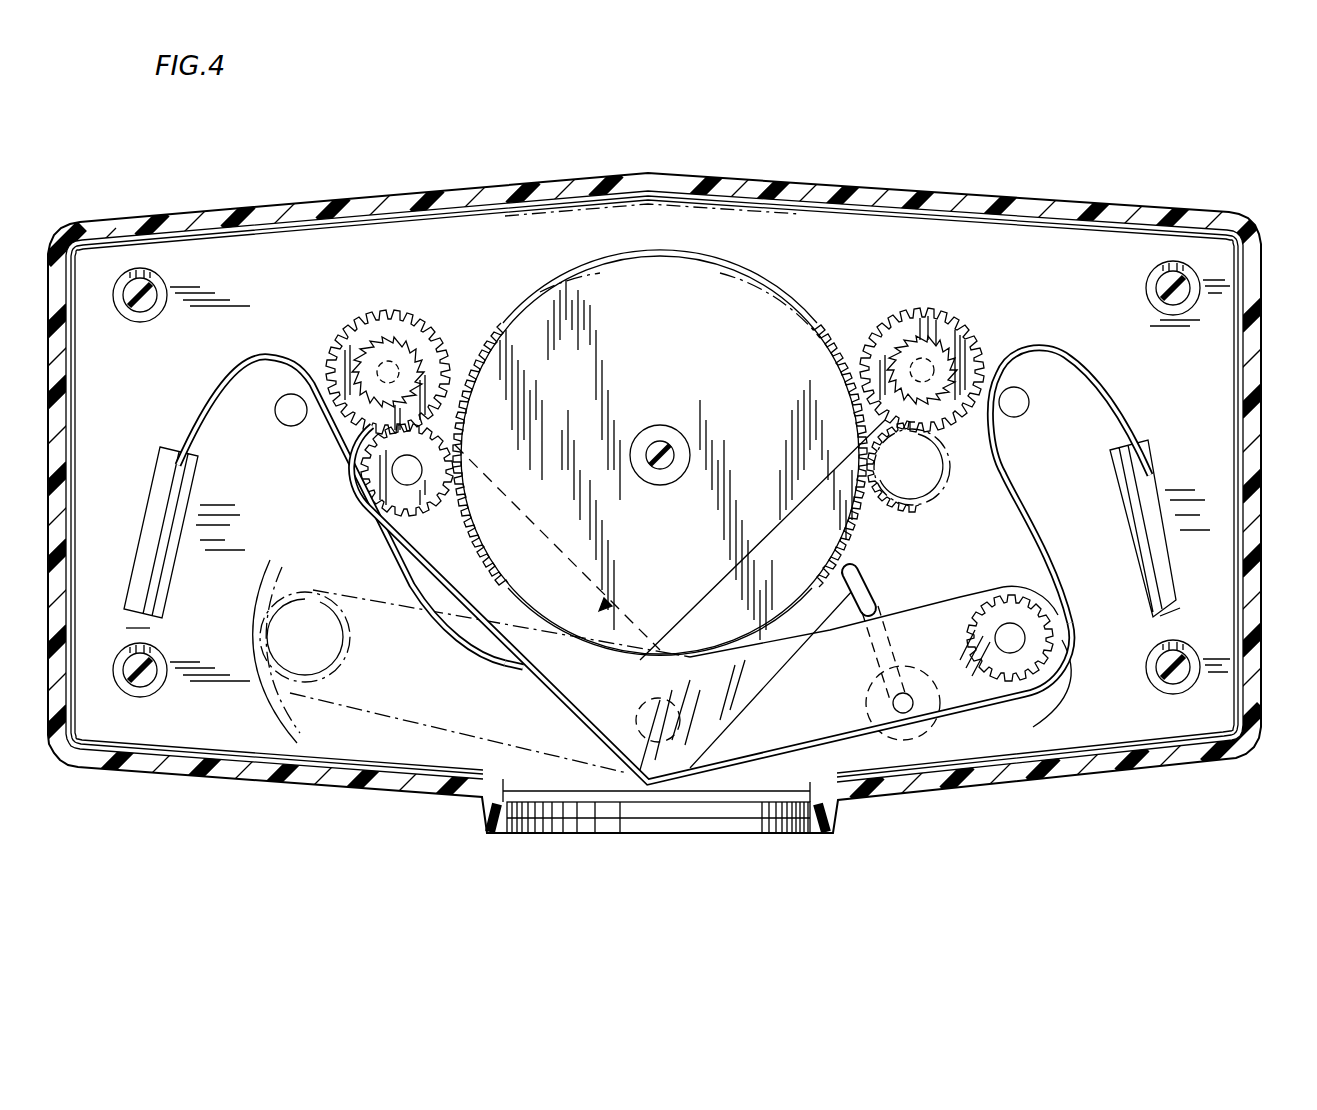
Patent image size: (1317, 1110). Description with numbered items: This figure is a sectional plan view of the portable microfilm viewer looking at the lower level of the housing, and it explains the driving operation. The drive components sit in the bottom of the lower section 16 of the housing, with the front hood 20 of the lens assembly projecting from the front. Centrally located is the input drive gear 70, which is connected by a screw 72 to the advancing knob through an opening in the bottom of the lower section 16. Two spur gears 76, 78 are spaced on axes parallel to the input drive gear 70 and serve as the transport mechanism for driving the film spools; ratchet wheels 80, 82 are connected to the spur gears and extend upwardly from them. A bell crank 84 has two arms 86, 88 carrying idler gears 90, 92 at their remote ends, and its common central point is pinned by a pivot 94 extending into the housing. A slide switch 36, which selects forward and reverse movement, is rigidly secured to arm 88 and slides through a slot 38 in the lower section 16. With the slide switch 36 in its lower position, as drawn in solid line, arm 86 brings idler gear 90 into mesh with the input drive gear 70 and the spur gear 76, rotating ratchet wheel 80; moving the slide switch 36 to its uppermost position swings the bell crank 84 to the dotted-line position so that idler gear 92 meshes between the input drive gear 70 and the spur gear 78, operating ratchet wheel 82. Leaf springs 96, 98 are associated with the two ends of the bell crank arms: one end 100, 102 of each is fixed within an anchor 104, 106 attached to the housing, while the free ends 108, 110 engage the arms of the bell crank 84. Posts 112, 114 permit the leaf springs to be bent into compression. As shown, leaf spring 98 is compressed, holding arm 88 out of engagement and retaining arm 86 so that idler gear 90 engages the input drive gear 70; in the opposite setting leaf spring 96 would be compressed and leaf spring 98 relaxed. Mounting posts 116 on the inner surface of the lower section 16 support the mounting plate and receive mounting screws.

The lower section 16 is at (1255, 562).
The front hood 20 is at (800, 834).
The slide switch 36 is at (912, 705).
The slot 38 is at (870, 584).
The input drive gear 70 is at (708, 268).
The screw 72 is at (690, 440).
The spur gear 76 is at (407, 327).
The spur gear 78 is at (915, 318).
The ratchet wheel 80 is at (375, 352).
The ratchet wheel 82 is at (945, 350).
The bell crank 84 is at (610, 600).
The arm 86 is at (563, 552).
The arm 88 is at (953, 600).
The idler gear 90 is at (428, 456).
The idler gear 92 is at (1013, 597).
The pivot 94 is at (682, 716).
The leaf spring 96 is at (240, 366).
The leaf spring 98 is at (1068, 364).
The leaf spring end 100 is at (1170, 611).
The leaf spring end 102 is at (150, 626).
The anchor 104 is at (1168, 548).
The anchor 106 is at (165, 560).
The free end 108 is at (1047, 716).
The free end 110 is at (490, 656).
The post 112 is at (1022, 412).
The post 114 is at (287, 420).
The mounting posts 116 is at (1160, 275).